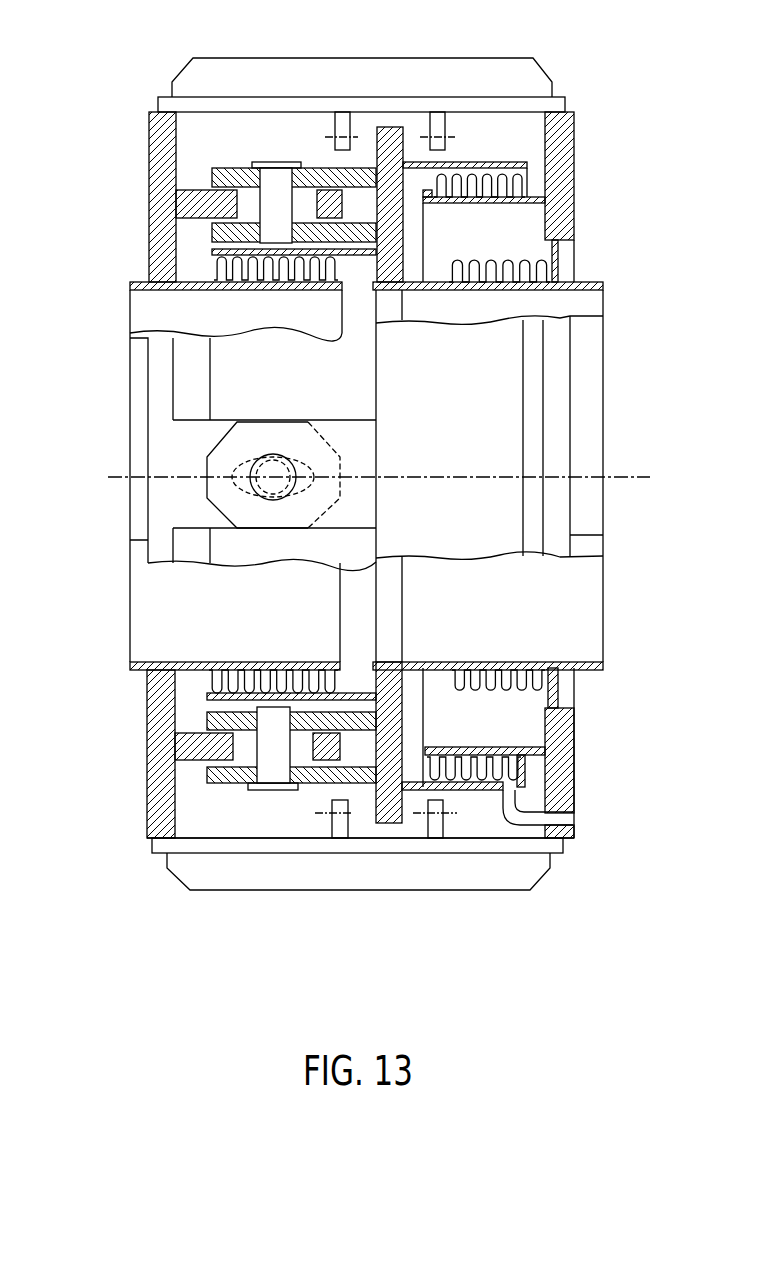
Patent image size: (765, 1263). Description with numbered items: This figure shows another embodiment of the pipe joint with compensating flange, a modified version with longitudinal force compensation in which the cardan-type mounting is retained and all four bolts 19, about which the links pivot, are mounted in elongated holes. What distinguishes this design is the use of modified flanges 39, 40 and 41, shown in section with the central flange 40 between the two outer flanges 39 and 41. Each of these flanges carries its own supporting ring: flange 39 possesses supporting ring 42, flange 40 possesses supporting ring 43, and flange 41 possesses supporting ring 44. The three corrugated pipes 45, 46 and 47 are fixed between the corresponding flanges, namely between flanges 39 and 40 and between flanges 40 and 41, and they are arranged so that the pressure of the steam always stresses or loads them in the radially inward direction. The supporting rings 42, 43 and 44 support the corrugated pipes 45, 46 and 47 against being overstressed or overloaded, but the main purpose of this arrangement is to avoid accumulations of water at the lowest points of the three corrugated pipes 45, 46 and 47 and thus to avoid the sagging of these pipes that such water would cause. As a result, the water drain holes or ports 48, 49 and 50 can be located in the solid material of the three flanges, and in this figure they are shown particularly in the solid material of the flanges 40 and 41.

The bolts 19 is at (290, 208).
The flange 39 is at (150, 203).
The flange 40 is at (388, 143).
The flange 41 is at (573, 147).
The supporting ring 42 is at (253, 289).
The supporting ring 43 is at (510, 288).
The supporting ring 44 is at (442, 200).
The corrugated pipe 45 is at (213, 263).
The corrugated pipe 46 is at (550, 267).
The corrugated pipe 47 is at (523, 187).
The water drain port 48 is at (388, 702).
The water drain port 49 is at (560, 753).
The water drain port 50 is at (508, 783).